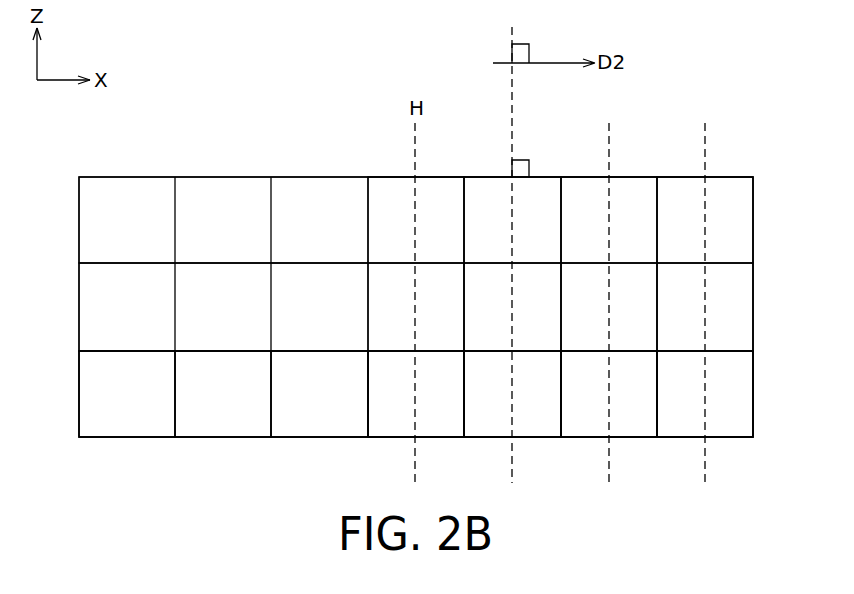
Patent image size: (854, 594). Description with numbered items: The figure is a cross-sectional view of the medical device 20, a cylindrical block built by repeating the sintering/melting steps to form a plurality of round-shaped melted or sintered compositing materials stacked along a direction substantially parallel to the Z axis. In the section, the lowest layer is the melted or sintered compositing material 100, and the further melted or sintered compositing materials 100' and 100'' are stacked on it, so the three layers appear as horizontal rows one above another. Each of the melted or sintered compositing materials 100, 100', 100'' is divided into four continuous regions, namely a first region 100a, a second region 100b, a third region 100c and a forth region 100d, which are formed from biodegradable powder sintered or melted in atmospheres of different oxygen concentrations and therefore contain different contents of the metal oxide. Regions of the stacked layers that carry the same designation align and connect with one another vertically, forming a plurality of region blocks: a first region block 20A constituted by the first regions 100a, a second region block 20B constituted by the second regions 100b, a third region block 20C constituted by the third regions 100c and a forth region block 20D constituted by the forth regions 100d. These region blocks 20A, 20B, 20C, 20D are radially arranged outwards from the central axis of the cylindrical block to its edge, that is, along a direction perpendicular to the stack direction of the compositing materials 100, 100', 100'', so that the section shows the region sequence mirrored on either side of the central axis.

The medical device 20 is at (81, 131).
The first region block 20A is at (433, 165).
The second region block 20B is at (542, 165).
The third region block 20C is at (633, 167).
The forth region block 20D is at (730, 167).
The melted or sintered compositing material 100 is at (390, 394).
The melted or sintered compositing material 100' is at (387, 307).
The melted or sintered compositing material 100'' is at (385, 220).
The first region 100a is at (441, 406).
The second region 100b is at (345, 406).
The third region 100c is at (248, 406).
The forth region 100d is at (153, 406).